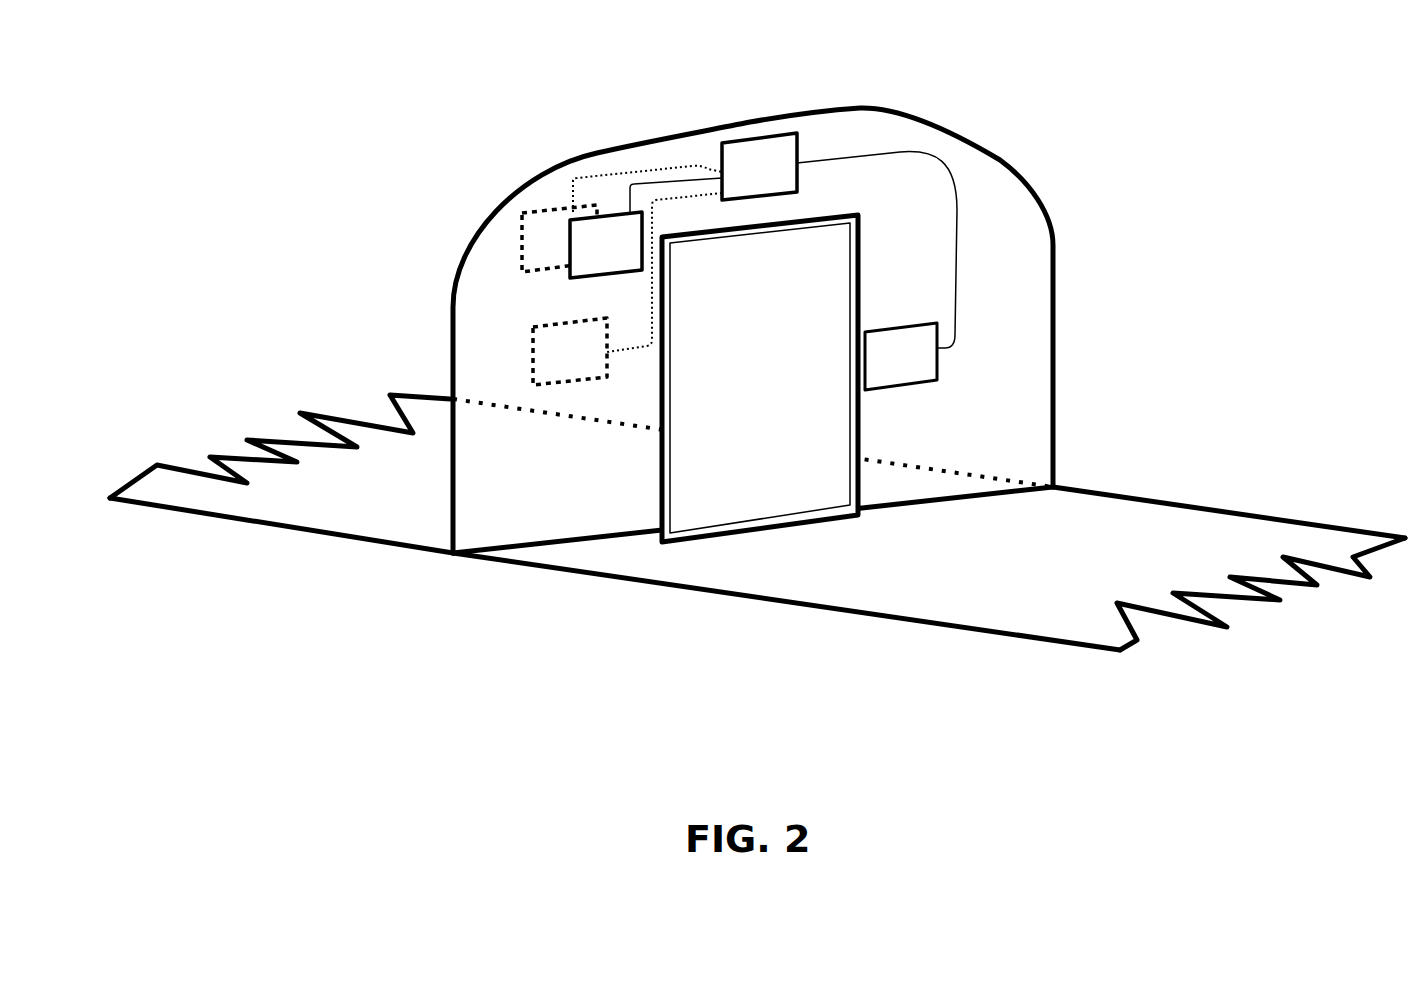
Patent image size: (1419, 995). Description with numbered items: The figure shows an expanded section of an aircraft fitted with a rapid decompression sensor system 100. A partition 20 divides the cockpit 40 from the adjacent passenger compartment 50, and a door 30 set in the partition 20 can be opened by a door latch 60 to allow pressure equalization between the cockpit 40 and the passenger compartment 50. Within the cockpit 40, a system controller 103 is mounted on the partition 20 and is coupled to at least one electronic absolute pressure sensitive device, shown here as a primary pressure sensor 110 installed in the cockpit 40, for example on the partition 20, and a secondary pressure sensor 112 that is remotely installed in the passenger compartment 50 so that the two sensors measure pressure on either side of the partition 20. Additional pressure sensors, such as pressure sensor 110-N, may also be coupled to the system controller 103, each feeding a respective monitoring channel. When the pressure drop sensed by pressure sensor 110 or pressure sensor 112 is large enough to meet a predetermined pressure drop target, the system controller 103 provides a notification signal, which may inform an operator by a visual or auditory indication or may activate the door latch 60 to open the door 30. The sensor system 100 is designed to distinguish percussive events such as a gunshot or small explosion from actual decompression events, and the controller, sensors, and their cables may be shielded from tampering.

The sensor system 100 is at (753, 298).
The partition 20 is at (1001, 255).
The door 30 is at (779, 394).
The cockpit 40 is at (1088, 573).
The passenger compartment 50 is at (392, 501).
The door latch 60 is at (913, 368).
The system controller 103 is at (777, 181).
The primary pressure sensor 110 is at (623, 258).
The secondary pressure sensor 112 is at (563, 251).
The pressure sensor 110-N is at (597, 365).